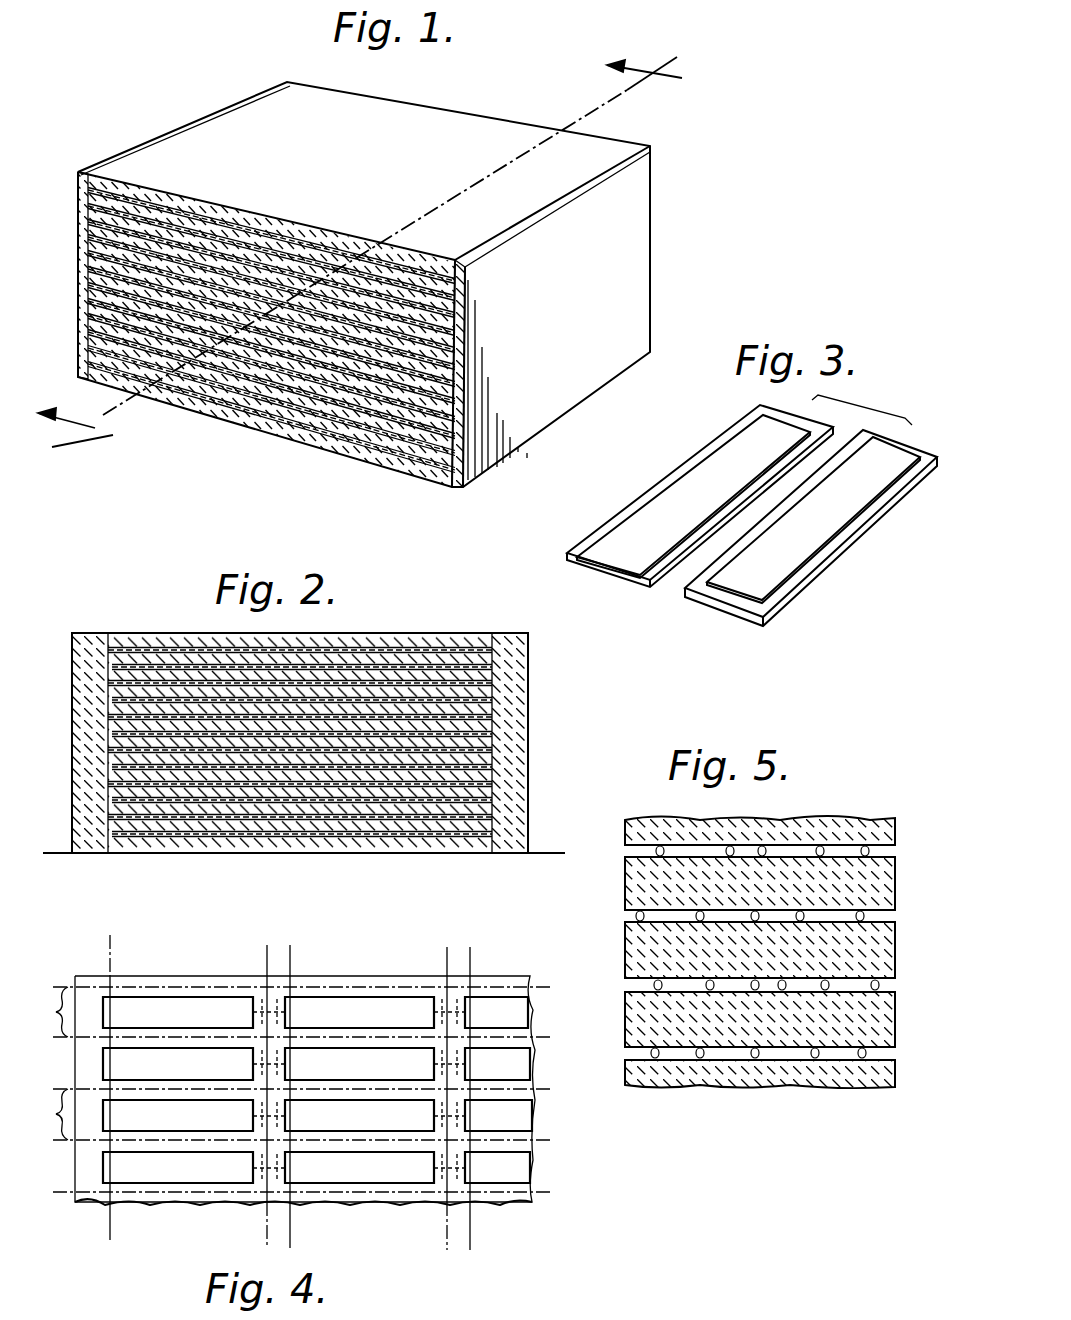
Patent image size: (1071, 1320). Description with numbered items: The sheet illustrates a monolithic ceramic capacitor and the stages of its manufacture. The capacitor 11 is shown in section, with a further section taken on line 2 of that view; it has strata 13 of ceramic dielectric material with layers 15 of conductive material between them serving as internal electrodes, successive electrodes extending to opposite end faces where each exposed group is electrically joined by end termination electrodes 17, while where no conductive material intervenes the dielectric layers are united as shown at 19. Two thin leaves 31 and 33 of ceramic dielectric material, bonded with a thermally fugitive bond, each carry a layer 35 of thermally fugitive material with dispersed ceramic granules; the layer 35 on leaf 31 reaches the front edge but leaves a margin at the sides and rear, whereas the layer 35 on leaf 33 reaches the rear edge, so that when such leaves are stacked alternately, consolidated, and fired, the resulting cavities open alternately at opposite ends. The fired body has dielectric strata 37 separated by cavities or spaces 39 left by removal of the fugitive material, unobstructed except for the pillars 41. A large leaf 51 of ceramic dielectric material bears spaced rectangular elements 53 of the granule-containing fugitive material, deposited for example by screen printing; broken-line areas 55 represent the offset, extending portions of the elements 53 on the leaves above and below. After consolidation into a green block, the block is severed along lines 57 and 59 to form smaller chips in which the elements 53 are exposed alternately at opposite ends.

In FIG. 1, the capacitor 11 is at (672, 183).
In FIG. 2, the capacitor 11 is at (108, 600).
In FIG. 1, the strata of ceramic dielectric material 13 is at (205, 262).
In FIG. 2, the strata of ceramic dielectric material 13 is at (170, 690).
In FIG. 1, the layers of conductive material 15 is at (305, 275).
In FIG. 2, the layers of conductive material 15 is at (462, 700).
In FIG. 1, the end termination electrodes 17 is at (190, 126).
In FIG. 1, the united dielectric layers 19 is at (78, 215).
In FIG. 2, the united dielectric layers 19 is at (72, 660).
In FIG. 1, the section line 2— 2 is at (371, 257).
In FIG. 3, the sheet or leaf 31 is at (625, 580).
In FIG. 3, the sheet or leaf 33 is at (745, 610).
In FIG. 3, the layer of thermally fugitive material 35 is at (700, 465).
In FIG. 5, the strata of dielectric material 37 is at (890, 865).
In FIG. 5, the cavities or spaces 39 is at (705, 832).
In FIG. 5, the pillars 41 is at (860, 842).
In FIG. 4, the leaf of ceramic dielectric material 51 is at (220, 975).
In FIG. 4, the rectangular elements 53 is at (138, 1060).
In FIG. 4, the areas 55 is at (300, 1020).
In FIG. 4, the cutting lines 57 is at (122, 942).
In FIG. 4, the cutting lines 59 is at (42, 1235).